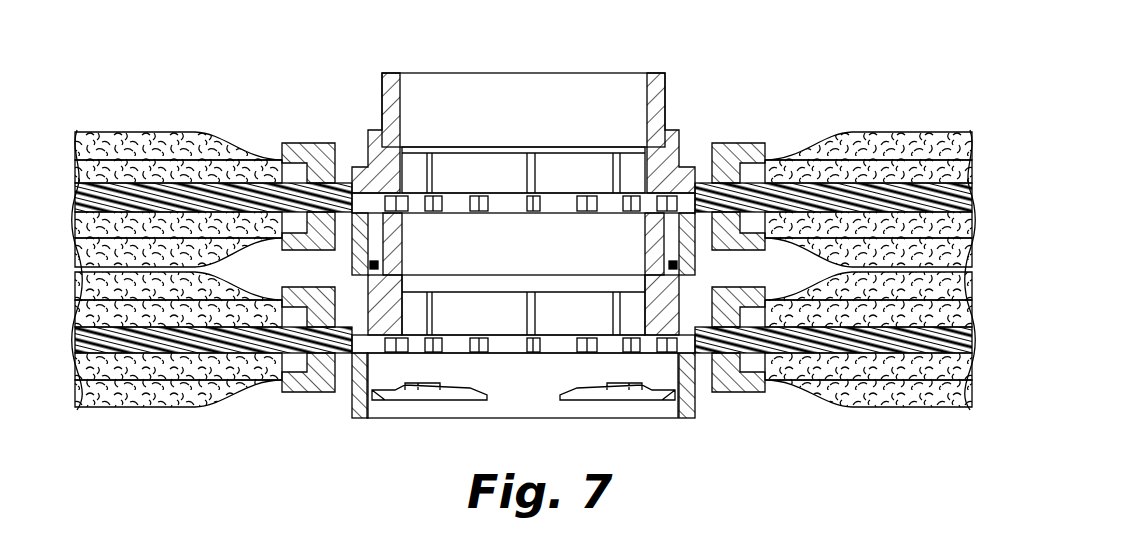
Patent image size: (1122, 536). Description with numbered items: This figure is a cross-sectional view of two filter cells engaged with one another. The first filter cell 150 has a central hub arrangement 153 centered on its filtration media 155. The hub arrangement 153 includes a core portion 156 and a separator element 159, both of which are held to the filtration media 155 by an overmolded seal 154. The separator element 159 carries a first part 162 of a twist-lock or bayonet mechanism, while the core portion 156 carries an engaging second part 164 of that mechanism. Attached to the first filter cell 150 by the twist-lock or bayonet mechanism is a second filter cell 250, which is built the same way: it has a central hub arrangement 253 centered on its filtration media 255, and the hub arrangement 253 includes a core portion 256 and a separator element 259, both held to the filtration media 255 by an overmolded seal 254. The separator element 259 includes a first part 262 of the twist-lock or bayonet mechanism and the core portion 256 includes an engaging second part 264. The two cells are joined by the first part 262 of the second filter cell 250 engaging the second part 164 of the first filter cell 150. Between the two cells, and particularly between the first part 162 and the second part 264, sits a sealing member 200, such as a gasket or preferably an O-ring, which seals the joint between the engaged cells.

The first filter cell 150 is at (820, 61).
The central hub arrangement 153 is at (559, 102).
The overmolded seal 154 is at (312, 142).
The filtration media 155 is at (172, 136).
The core portion 156 is at (393, 79).
The separator element 159 is at (350, 257).
The first part of twist-lock or bayonet mechanism 162 is at (697, 256).
The second part of twist-lock or bayonet mechanism 164 is at (666, 74).
The sealing member 200 is at (380, 266).
The second filter cell 250 is at (800, 431).
The central hub arrangement 253 is at (354, 415).
The overmolded seal 254 is at (293, 392).
The filtration media 255 is at (132, 394).
The core portion 256 is at (393, 248).
The separator element 259 is at (687, 412).
The first part of twist-lock or bayonet mechanism 262 is at (428, 400).
The second part of twist-lock or bayonet mechanism 264 is at (665, 228).